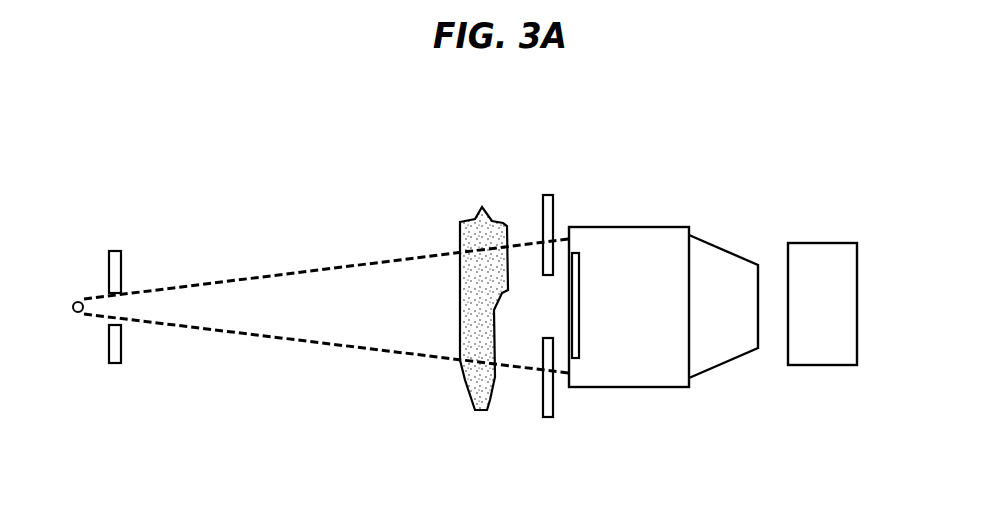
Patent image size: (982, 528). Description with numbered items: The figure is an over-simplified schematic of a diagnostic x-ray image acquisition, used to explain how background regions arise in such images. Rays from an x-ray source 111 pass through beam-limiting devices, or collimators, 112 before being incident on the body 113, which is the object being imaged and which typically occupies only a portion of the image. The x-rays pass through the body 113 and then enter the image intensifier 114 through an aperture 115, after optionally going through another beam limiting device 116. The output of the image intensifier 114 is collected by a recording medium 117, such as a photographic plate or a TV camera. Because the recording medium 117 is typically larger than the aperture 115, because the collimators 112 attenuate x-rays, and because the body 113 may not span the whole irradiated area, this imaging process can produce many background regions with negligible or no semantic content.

The x-ray source 111 is at (76, 302).
The beam-limiting devices (collimators) 112 is at (121, 355).
The body 113 is at (460, 233).
The image intensifier 114 is at (630, 226).
The aperture 115 is at (580, 340).
The beam limiting device 116 is at (543, 415).
The recording medium 117 is at (827, 365).